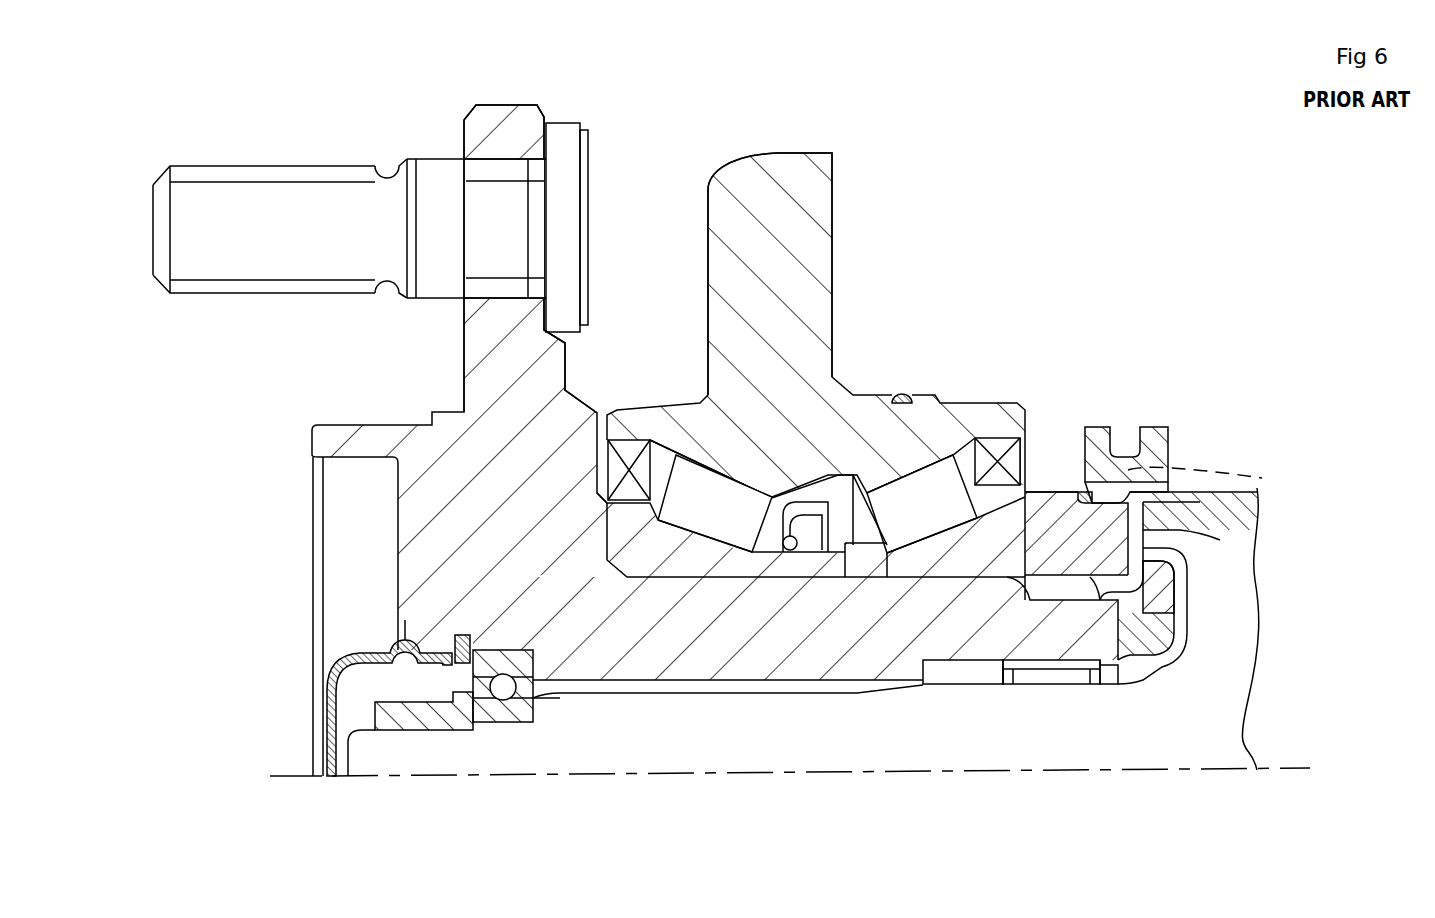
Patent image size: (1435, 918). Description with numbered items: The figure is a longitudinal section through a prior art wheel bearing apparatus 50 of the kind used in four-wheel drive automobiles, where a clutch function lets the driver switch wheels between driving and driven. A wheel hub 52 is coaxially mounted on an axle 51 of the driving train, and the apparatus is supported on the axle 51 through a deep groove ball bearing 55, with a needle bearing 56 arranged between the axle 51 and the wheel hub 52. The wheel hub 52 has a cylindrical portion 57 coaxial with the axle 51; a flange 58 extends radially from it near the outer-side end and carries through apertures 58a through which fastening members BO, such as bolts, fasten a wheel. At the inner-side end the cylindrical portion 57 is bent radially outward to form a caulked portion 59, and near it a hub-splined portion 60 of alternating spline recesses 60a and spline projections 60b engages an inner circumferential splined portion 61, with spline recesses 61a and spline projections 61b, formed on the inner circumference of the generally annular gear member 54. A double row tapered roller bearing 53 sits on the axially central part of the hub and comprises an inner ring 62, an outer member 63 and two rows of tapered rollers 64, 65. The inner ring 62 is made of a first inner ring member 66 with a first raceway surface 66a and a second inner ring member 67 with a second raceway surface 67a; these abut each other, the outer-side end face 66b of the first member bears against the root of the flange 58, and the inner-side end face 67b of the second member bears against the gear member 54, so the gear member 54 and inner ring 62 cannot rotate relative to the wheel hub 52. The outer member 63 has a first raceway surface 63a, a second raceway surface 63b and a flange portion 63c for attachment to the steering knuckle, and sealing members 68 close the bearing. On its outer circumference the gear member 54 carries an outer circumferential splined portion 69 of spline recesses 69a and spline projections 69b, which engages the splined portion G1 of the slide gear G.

The fastening member BO is at (303, 176).
The wheel bearing apparatus 50 is at (967, 217).
The axle 51 is at (561, 729).
The wheel hub 52 is at (420, 503).
The double row tapered roller bearing 53 is at (920, 300).
The gear member 54 is at (1066, 486).
The deep groove ball bearing 55 is at (510, 722).
The needle bearing 56 is at (1006, 685).
The cylindrical portion 57 is at (680, 640).
The flange 58 is at (505, 348).
The through aperture 58a is at (480, 186).
The caulked portion 59 is at (1160, 575).
The hub-splined portion 60 is at (1020, 675).
The spline recess 60a is at (1027, 597).
The spline projection 60b is at (1073, 580).
The inner circumferential splined portion 61 is at (1238, 616).
The spline recess 61a is at (1187, 613).
The spline projection 61b is at (1133, 657).
The inner ring 62 is at (748, 589).
The outer member 63 is at (868, 405).
The first raceway surface 63a is at (685, 410).
The second raceway surface 63b is at (942, 405).
The flange portion 63c is at (788, 190).
The tapered roller 64 is at (752, 490).
The tapered roller 65 is at (895, 490).
The first inner ring member 66 is at (658, 569).
The first raceway surface 66a is at (700, 580).
The outer-side end face 66b is at (600, 545).
The second inner ring member 67 is at (924, 569).
The second raceway surface 67a is at (910, 580).
The inner-side end face 67b is at (1043, 492).
The sealing member 68 is at (612, 410).
The outer circumferential splined portion 69 is at (1247, 616).
The spline recess 69a is at (1250, 492).
The spline projection 69b is at (1219, 475).
The slide gear G is at (1155, 447).
The splined portion G1 is at (1102, 497).